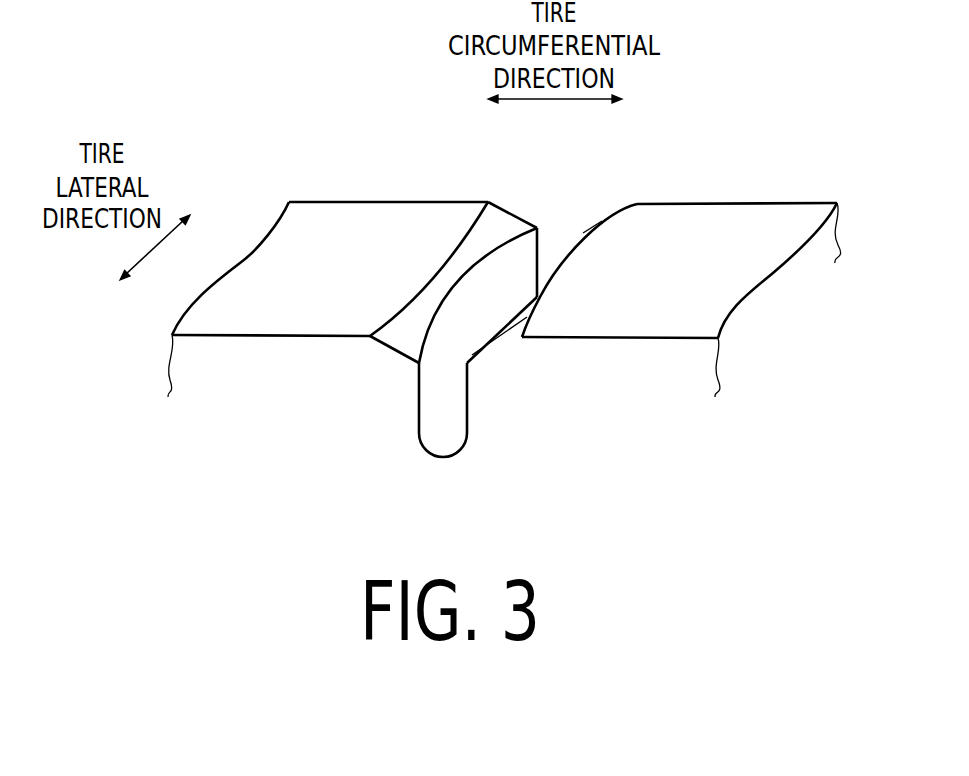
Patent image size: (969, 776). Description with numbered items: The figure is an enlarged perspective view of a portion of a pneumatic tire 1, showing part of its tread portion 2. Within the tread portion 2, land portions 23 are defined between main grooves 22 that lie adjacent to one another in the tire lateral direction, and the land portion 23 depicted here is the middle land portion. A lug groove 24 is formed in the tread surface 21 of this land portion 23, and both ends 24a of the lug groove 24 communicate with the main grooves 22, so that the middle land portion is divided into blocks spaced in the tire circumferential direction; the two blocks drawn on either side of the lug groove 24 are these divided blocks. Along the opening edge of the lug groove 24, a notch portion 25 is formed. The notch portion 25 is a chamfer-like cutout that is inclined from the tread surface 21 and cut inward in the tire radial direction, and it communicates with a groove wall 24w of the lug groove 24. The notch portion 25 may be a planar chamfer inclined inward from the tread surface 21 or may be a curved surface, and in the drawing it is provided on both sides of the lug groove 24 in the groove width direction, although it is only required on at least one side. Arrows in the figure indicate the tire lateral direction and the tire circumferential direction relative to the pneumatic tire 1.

The pneumatic tire 1 is at (742, 100).
The tread portion 2 is at (307, 212).
The tread surface 21 is at (335, 215).
The main grooves 22 is at (423, 170).
The land portion 23 is at (770, 212).
The lug groove 24 is at (430, 413).
The ends of the lug groove 24a is at (540, 275).
The groove wall 24w is at (523, 262).
The notch portion 25 is at (472, 253).